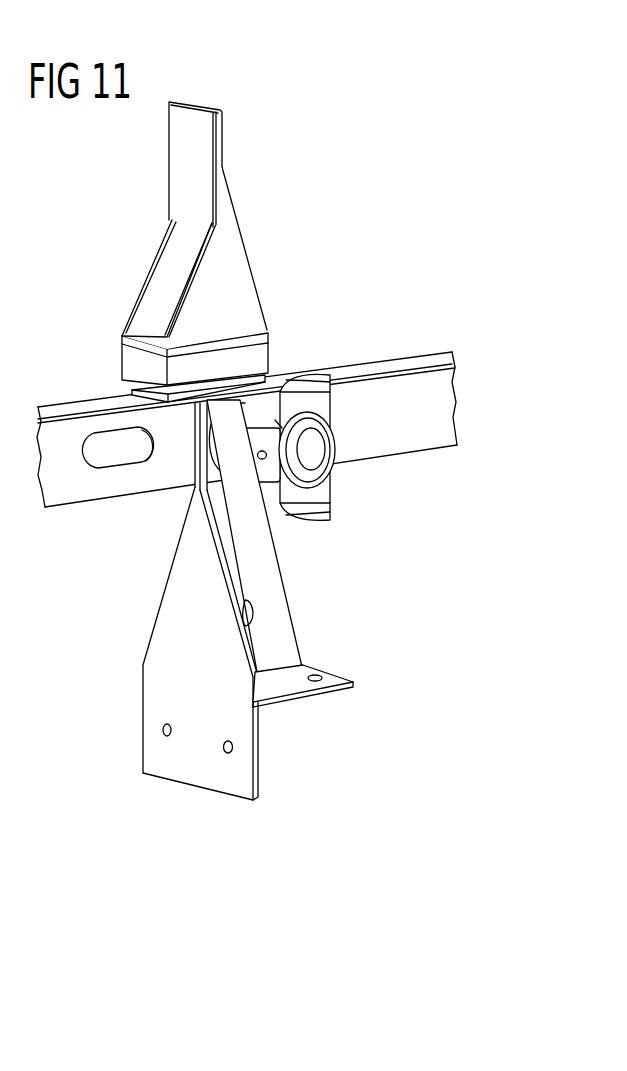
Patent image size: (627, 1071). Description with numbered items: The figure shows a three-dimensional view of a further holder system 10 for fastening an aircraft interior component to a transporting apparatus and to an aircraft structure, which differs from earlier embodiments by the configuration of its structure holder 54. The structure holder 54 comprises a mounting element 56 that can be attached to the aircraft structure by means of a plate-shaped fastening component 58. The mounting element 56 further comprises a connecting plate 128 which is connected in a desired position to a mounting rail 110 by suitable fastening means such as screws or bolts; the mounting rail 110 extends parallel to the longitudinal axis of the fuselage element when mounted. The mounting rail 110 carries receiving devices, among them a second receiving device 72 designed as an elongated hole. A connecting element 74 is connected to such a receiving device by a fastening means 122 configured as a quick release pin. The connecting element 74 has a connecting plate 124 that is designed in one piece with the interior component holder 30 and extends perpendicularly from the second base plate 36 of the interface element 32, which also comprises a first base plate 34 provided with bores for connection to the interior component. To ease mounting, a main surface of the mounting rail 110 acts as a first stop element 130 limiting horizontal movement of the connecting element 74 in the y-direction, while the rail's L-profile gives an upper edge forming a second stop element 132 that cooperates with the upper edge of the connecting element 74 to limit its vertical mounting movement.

The holder system 10 is at (416, 174).
The interior component holder 30 is at (104, 720).
The interface element 32 is at (292, 738).
The first base plate 34 is at (170, 767).
The second base plate 36 is at (330, 682).
The structure holder 54 is at (304, 322).
The mounting element 56 is at (243, 273).
The plate-shaped fastening component 58 is at (180, 150).
The second receiving device 72 is at (118, 453).
The connecting element 74 is at (324, 567).
The mounting rail 110 is at (456, 405).
The fastening means 122 is at (320, 447).
The connecting plate 124 is at (273, 595).
The connecting plate 128 is at (130, 392).
The first stop element 130 is at (75, 490).
The second stop element 132 is at (422, 367).